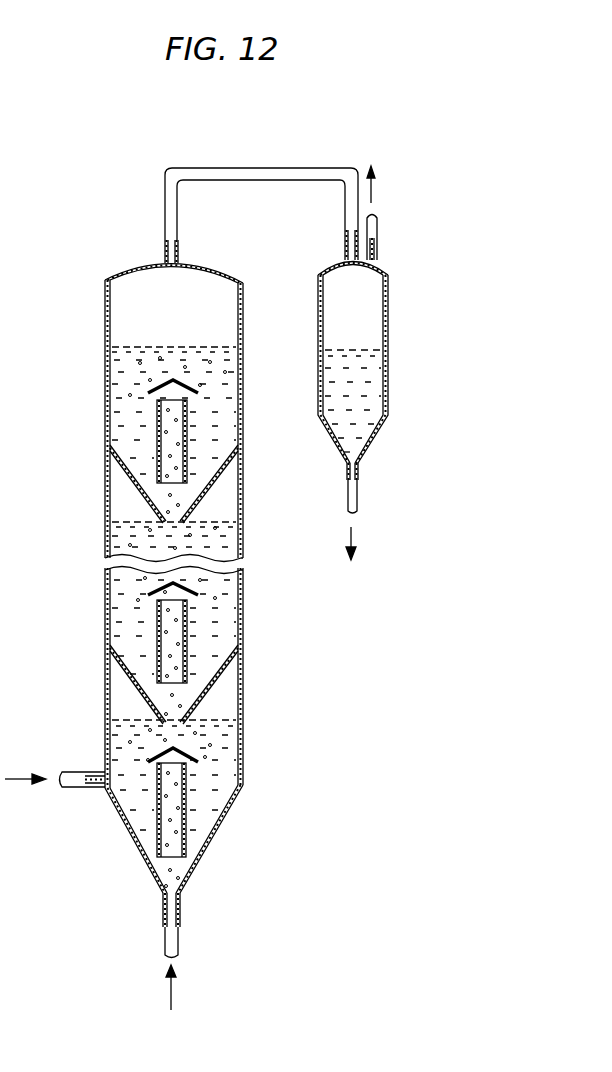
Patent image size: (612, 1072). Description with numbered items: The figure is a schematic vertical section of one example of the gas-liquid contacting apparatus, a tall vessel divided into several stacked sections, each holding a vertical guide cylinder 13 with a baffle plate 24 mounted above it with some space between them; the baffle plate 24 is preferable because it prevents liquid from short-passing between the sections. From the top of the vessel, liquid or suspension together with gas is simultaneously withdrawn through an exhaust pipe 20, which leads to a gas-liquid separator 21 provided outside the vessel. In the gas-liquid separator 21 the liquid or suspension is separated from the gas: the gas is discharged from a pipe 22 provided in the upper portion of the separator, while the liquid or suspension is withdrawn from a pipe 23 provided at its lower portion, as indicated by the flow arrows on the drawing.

The guide cylinder 13 is at (188, 430).
The exhaust pipe 20 is at (242, 172).
The gas-liquid separator 21 is at (389, 308).
The pipe 22 is at (379, 227).
The pipe 23 is at (356, 503).
The baffle plate 24 is at (178, 387).